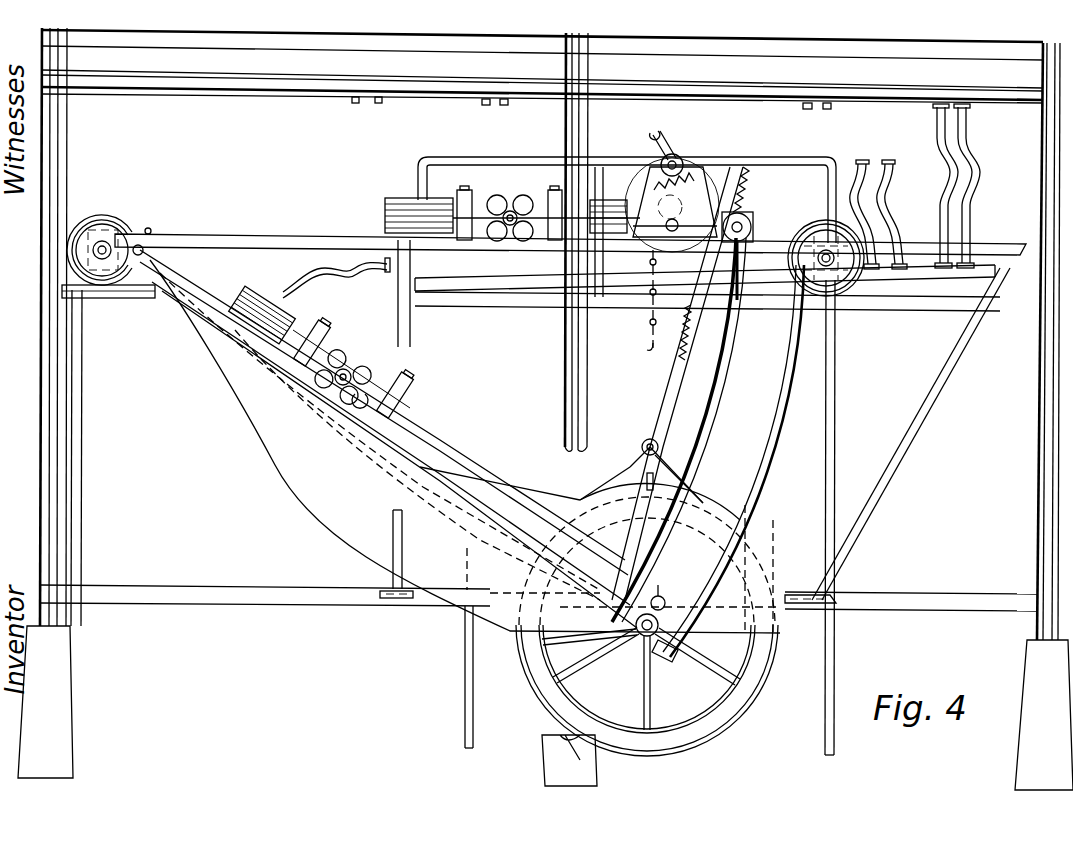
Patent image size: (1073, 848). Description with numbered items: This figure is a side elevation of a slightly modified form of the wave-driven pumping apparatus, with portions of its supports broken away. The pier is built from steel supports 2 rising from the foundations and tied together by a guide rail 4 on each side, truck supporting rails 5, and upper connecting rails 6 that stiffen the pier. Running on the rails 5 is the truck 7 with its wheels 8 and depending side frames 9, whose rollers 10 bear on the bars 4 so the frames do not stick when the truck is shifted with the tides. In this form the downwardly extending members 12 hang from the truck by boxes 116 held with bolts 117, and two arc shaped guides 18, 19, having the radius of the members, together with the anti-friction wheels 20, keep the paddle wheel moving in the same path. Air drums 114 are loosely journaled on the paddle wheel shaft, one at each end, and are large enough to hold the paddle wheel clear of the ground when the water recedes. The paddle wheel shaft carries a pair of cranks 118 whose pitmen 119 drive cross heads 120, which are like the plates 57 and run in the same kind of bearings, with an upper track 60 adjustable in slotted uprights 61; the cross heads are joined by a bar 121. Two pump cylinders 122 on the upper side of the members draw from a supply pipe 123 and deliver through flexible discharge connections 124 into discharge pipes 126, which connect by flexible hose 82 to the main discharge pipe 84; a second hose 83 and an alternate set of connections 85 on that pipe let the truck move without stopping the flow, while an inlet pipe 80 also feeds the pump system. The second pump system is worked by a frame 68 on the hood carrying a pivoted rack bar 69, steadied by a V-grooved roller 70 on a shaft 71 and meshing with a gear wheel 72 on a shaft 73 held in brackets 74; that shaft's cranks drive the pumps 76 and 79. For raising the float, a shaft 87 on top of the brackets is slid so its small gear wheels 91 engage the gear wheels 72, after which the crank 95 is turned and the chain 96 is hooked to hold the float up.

The steel supports 2 is at (47, 357).
The guide rail 4 is at (220, 606).
The truck supporting rails 5 is at (468, 307).
The upper connecting rails 6 is at (422, 38).
The truck 7 is at (245, 234).
The wheels 8 is at (110, 218).
The depending side frames 9 is at (83, 473).
The rollers 10 is at (392, 600).
The downwardly extending members 12 is at (175, 290).
The arc shaped guide 18 is at (762, 488).
The arc shaped guide 19 is at (730, 337).
The anti-friction wheels 20 is at (760, 538).
The plates 57 is at (500, 205).
The upper track 60 is at (352, 360).
The slotted uprights 61 is at (313, 330).
The frame 68 is at (620, 478).
The rack bar 69 is at (648, 439).
The roller 70 is at (748, 215).
The shaft 71 is at (745, 226).
The gear wheel 72 is at (655, 192).
The shaft 73 is at (660, 232).
The brackets 74 is at (715, 170).
The pump 76 is at (398, 200).
The pump 79 is at (600, 210).
The inlet pipe 80 is at (836, 443).
The flexible hose 82 is at (955, 185).
The flexible hose 83 is at (890, 180).
The main discharge pipe 84 is at (225, 94).
The connections 85 is at (356, 104).
The shaft 87 is at (653, 135).
The small gear wheels 91 is at (680, 160).
The crank 95 is at (678, 158).
The chain 96 is at (648, 333).
The air drums 114 is at (712, 718).
The boxes 116 is at (145, 252).
The bolts 117 is at (152, 230).
The cranks 118 is at (662, 596).
The pitmen 119 is at (446, 452).
The cross heads 120 is at (375, 392).
The bar 121 is at (355, 380).
The pump cylinders 122 is at (262, 300).
The supply pipe 123 is at (480, 612).
The flexible discharge connections 124 is at (342, 270).
The discharge pipes 126 is at (503, 278).